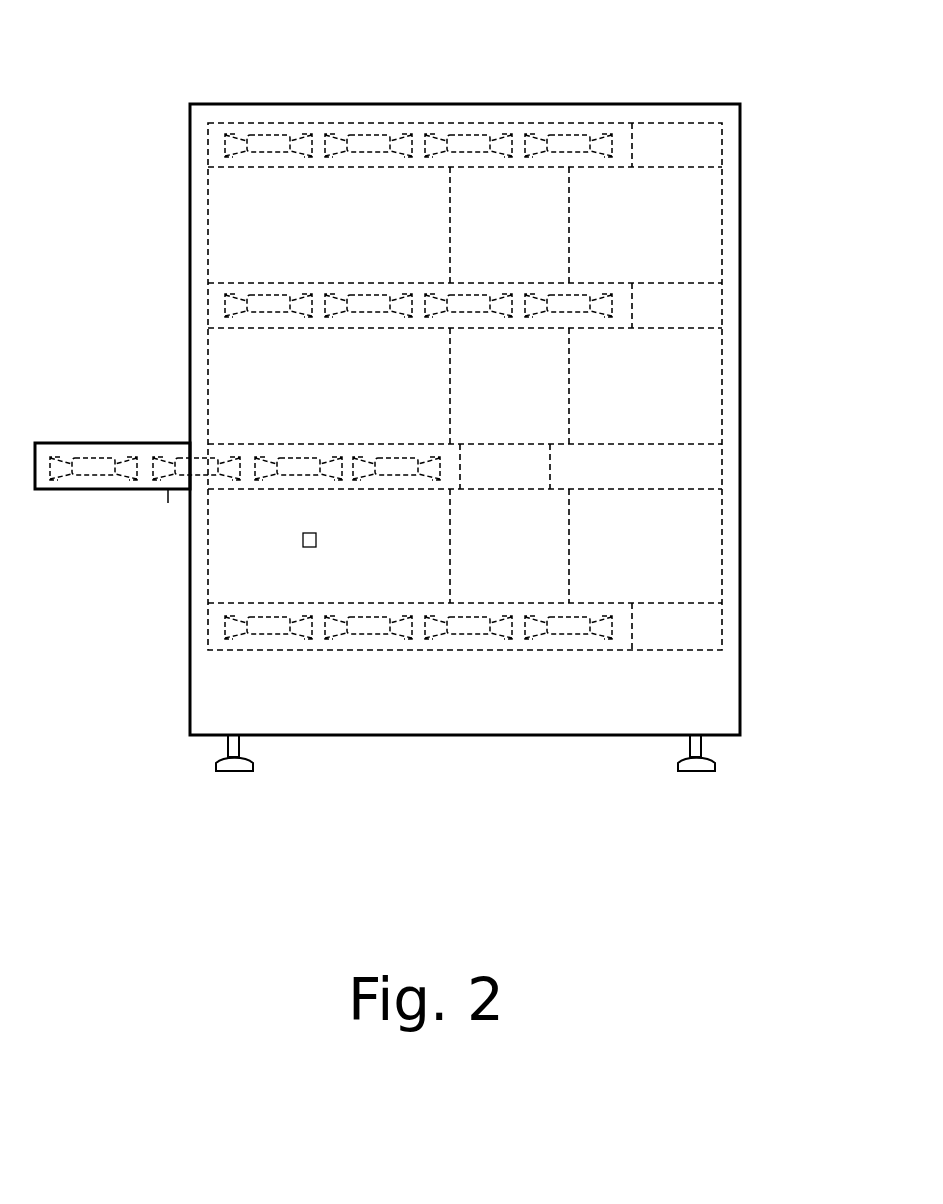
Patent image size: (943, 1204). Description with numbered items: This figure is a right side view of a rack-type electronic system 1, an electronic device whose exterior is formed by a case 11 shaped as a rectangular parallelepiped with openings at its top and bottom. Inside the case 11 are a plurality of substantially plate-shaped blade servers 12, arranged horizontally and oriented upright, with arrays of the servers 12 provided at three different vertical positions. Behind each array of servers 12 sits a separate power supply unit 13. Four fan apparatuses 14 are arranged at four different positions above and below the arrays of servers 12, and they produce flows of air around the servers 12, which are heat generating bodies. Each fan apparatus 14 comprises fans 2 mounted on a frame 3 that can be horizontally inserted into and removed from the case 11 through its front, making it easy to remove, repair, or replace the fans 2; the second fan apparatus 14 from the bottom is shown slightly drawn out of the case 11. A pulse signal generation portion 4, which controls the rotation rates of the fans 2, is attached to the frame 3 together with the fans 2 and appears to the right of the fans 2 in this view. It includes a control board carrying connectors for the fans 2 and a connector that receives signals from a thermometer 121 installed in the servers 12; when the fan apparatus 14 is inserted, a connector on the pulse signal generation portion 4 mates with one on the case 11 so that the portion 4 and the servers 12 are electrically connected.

The rack-type electronic system 1 is at (187, 70).
The case 11 is at (450, 104).
The blade server 12 is at (240, 232).
The power supply unit 13 is at (685, 225).
The thermometer 121 is at (308, 548).
The fan apparatus 14 is at (206, 147).
The pulse signal generation portion 4 is at (690, 148).
The frame 3 is at (92, 443).
The fan 2 is at (165, 491).